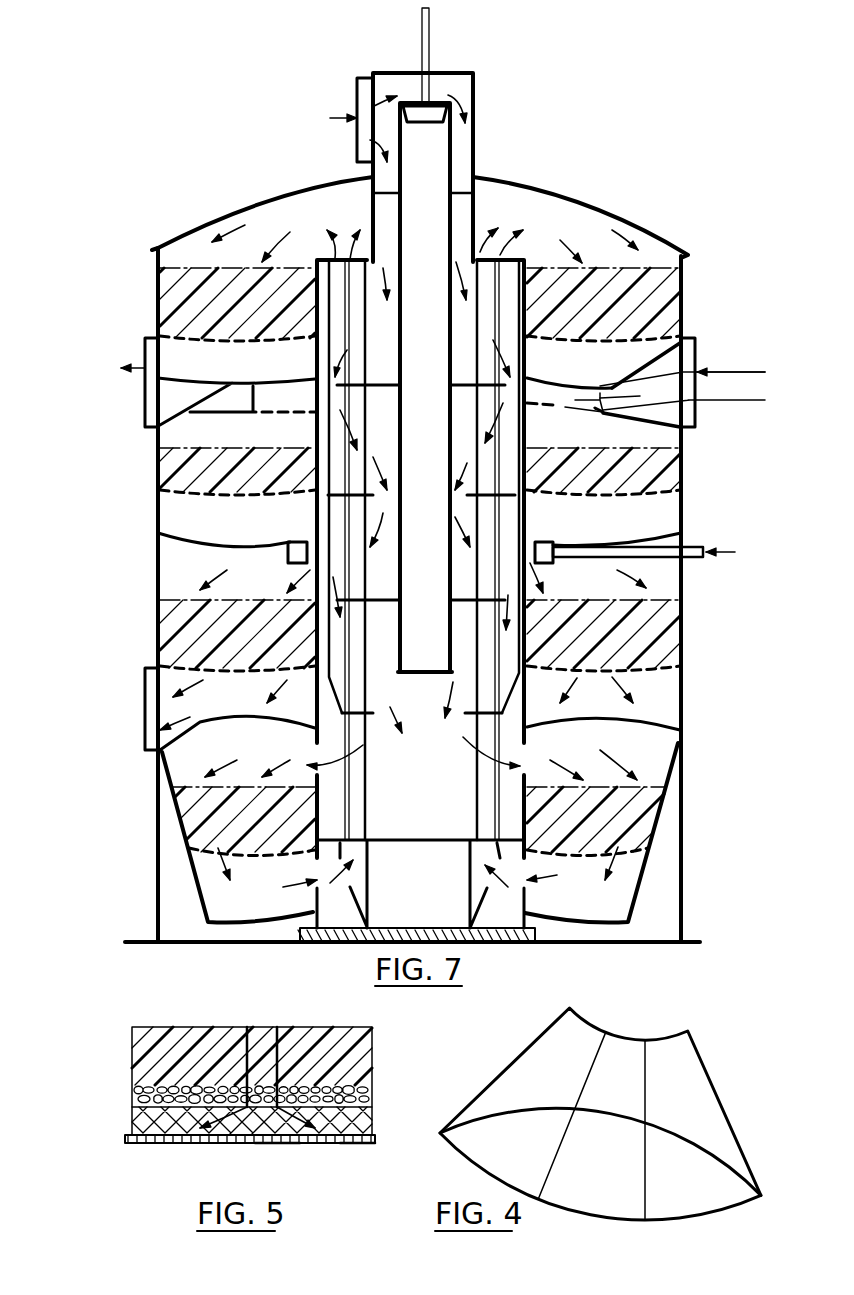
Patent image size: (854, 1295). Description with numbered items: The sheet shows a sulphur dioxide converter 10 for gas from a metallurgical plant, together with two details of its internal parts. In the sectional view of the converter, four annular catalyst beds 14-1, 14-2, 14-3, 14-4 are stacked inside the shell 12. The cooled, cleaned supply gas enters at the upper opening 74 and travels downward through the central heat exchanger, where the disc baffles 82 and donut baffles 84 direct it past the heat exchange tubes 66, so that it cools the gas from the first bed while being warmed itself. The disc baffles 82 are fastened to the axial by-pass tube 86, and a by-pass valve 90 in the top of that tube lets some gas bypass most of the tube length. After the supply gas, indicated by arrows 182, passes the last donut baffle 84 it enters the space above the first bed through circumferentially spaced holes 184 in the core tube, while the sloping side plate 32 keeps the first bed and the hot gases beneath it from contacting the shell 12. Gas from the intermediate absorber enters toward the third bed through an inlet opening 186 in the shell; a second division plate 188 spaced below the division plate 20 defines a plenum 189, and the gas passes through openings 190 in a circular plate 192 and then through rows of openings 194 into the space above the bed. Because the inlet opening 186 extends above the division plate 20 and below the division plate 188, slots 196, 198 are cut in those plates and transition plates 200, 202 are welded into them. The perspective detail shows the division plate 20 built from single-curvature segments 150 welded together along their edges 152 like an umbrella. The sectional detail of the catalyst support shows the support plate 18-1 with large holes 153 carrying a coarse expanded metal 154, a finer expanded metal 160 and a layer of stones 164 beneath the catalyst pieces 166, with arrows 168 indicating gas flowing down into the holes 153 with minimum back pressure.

In FIG. 7, the gas treating apparatus 10 is at (240, 175).
In FIG. 7, the shell 12 is at (158, 572).
In FIG. 7, the first catalyst bed 14-1 is at (190, 818).
In FIG. 5, the first catalyst bed 14-1 is at (140, 1040).
In FIG. 7, the second catalyst bed 14-2 is at (160, 305).
In FIG. 7, the third catalyst bed 14-3 is at (160, 470).
In FIG. 7, the fourth catalyst bed 14-4 is at (160, 636).
In FIG. 5, the first bed support plate 18-1 is at (365, 1145).
In FIG. 7, the division plate 20 is at (597, 340).
In FIG. 4, the division plate 20 is at (632, 1030).
In FIG. 7, the side plate 32 is at (195, 875).
In FIG. 7, the heat exchange tubes 66 is at (370, 572).
In FIG. 7, the upper opening 74 is at (357, 92).
In FIG. 7, the disc baffles 82 is at (385, 383).
In FIG. 7, the donut baffles 84 is at (352, 497).
In FIG. 7, the by-pass tube 86 is at (397, 642).
In FIG. 7, the by-pass valve 90 is at (430, 110).
In FIG. 4, the segments 150 is at (533, 1058).
In FIG. 4, the edges 152 is at (578, 1112).
In FIG. 5, the holes 153 is at (192, 1145).
In FIG. 5, the expanded metal 154 is at (134, 1122).
In FIG. 5, the second layer of expanded metal 160 is at (134, 1104).
In FIG. 5, the layer of stones 164 is at (134, 1088).
In FIG. 5, the catalyst pieces 166 is at (360, 1046).
In FIG. 5, the arrows 168 is at (290, 1145).
In FIG. 7, the arrows 182 is at (352, 745).
In FIG. 7, the holes 184 is at (315, 745).
In FIG. 7, the inlet opening 186 is at (697, 345).
In FIG. 7, the second division plate 188 is at (572, 416).
In FIG. 7, the plenum 189 is at (640, 400).
In FIG. 7, the openings 190 is at (595, 413).
In FIG. 7, the circular plate 192 is at (590, 400).
In FIG. 7, the openings 194 is at (557, 413).
In FIG. 7, the slot 196 is at (697, 372).
In FIG. 7, the slot 198 is at (697, 400).
In FIG. 7, the transition plate 200 is at (650, 360).
In FIG. 7, the transition plate 202 is at (686, 434).